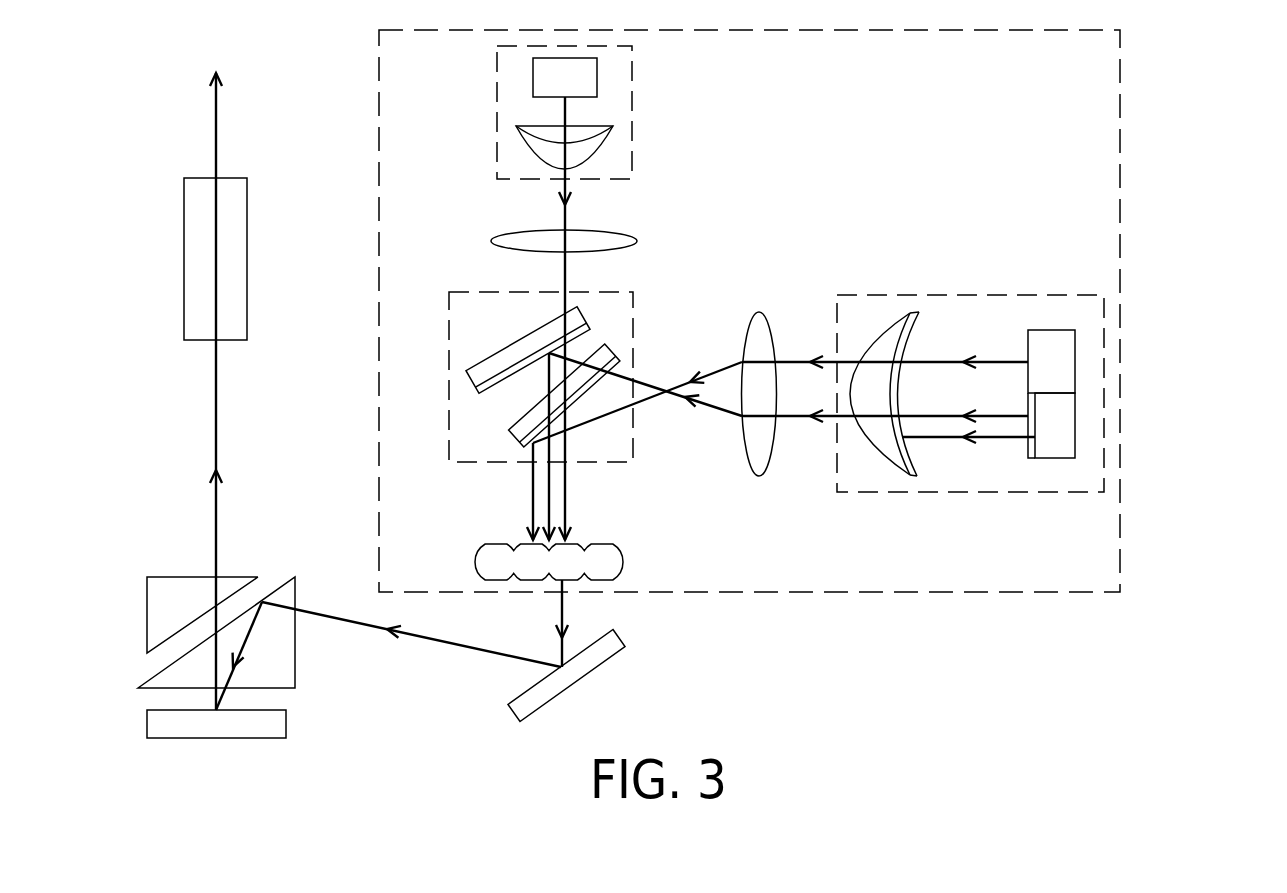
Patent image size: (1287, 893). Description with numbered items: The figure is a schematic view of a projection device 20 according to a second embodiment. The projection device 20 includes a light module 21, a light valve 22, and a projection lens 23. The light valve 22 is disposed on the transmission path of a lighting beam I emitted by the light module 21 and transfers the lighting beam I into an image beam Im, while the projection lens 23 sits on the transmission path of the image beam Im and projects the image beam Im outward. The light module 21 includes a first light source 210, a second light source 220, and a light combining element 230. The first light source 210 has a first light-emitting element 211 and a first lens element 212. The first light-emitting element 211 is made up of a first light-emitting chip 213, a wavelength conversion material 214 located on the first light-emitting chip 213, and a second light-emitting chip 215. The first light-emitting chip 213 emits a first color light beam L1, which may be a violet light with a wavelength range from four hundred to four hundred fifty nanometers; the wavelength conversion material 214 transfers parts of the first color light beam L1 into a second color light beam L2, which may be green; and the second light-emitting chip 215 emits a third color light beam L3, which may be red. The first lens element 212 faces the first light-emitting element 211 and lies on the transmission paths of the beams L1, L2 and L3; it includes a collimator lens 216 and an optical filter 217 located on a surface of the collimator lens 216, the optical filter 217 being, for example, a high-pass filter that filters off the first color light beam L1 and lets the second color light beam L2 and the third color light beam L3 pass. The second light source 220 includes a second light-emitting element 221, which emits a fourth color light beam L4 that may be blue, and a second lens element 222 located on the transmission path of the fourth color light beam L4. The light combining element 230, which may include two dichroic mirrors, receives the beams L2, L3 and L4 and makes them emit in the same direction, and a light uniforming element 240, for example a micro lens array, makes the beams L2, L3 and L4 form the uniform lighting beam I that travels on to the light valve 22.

The projection device 20 is at (1209, 39).
The light module 21 is at (1120, 99).
The light valve 22 is at (147, 726).
The projection lens 23 is at (184, 263).
The first light source 210 is at (1104, 319).
The first light-emitting element 211 is at (1205, 359).
The first lens element 212 is at (948, 212).
The first light-emitting chip 213 is at (1075, 432).
The wavelength conversion material 214 is at (1030, 458).
The second light-emitting chip 215 is at (1075, 378).
The collimator lens 216 is at (868, 330).
The optical filter 217 is at (918, 313).
The second light source 220 is at (632, 66).
The second light-emitting element 221 is at (533, 82).
The second lens element 222 is at (520, 153).
The light combining element 230 is at (633, 309).
The light uniforming element 240 is at (623, 562).
The first color light beam L1 is at (997, 437).
The second color light beam L2 is at (927, 437).
The third color light beam L3 is at (1000, 362).
The fourth color light beam L4 is at (565, 115).
The lighting beam I is at (563, 612).
The image beam Im is at (217, 398).